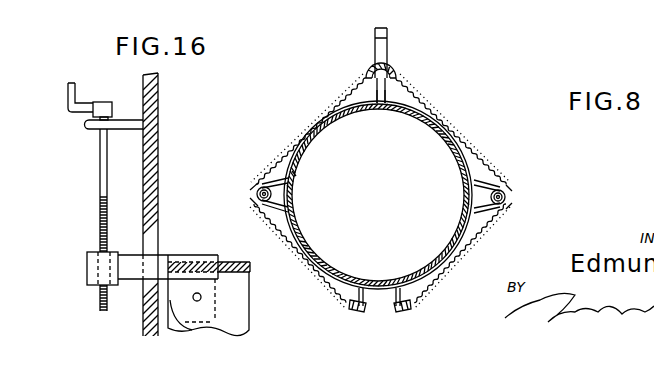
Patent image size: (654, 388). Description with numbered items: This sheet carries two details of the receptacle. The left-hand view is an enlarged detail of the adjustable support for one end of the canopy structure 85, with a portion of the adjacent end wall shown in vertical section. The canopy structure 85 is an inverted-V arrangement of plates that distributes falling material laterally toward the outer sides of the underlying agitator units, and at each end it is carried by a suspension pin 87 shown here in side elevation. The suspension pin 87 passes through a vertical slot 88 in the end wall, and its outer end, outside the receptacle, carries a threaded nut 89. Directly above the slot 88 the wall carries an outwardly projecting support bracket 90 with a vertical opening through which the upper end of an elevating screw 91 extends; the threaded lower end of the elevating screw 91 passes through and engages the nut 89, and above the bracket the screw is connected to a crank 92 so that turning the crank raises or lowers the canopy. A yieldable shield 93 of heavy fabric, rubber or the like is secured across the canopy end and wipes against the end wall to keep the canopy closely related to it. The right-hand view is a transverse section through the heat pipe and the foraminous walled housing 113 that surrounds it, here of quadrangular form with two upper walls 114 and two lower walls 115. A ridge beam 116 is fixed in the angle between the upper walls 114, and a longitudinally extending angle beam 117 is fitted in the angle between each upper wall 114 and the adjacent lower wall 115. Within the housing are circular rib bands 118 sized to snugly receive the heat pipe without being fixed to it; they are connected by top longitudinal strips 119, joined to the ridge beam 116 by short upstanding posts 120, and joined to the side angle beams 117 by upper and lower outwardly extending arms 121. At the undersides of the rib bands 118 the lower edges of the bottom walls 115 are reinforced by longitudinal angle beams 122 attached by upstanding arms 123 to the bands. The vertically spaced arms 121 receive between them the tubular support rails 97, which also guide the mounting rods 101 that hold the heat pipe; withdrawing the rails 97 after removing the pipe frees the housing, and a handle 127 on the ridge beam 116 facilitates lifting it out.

In FIG. 16, the canopy structure 85 is at (258, 251).
In FIG. 16, the suspension pin 87 is at (166, 257).
In FIG. 16, the slot 88 is at (148, 289).
In FIG. 16, the threaded nut 89 is at (87, 267).
In FIG. 16, the support bracket 90 is at (88, 125).
In FIG. 16, the elevating screw 91 is at (100, 177).
In FIG. 16, the crank 92 is at (67, 97).
In FIG. 16, the yieldable shield 93 is at (162, 305).
In FIG. 8, the tubular support rail 97 is at (494, 197).
In FIG. 8, the mounting rod 101 is at (516, 194).
In FIG. 8, the foraminous walled housing 113 is at (352, 71).
In FIG. 8, the upper wall 114 is at (332, 96).
In FIG. 8, the lower wall 115 is at (504, 238).
In FIG. 8, the ridge beam 116 is at (384, 90).
In FIG. 8, the angle beam 117 is at (245, 186).
In FIG. 8, the rib band 118 is at (431, 117).
In FIG. 8, the top longitudinal strip 119 is at (302, 122).
In FIG. 8, the upstanding post 120 is at (388, 102).
In FIG. 8, the outwardly extending arm 121 is at (294, 174).
In FIG. 8, the longitudinal angle beam 122 is at (366, 316).
In FIG. 8, the upstanding arm 123 is at (400, 316).
In FIG. 8, the handle 127 is at (376, 37).